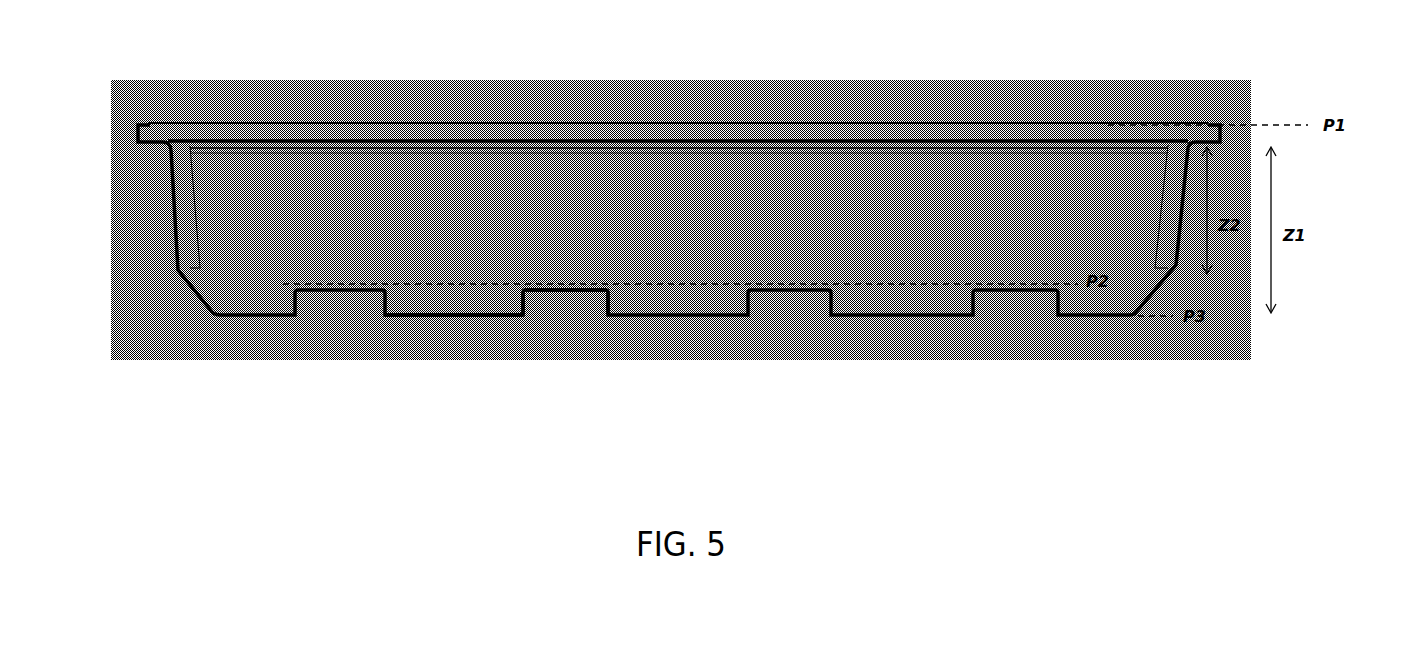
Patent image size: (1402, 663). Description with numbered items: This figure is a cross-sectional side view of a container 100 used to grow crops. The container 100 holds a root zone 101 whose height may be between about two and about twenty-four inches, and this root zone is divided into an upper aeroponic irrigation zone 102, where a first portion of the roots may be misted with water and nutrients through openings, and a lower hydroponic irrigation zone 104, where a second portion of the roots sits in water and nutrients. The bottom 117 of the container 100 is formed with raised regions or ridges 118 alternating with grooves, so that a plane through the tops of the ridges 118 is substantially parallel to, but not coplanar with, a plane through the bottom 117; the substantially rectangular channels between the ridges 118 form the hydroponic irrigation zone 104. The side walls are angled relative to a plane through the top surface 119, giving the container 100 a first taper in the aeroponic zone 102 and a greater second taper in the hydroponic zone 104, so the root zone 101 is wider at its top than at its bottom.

The container 100 is at (132, 122).
The root zone 101 is at (253, 185).
The aeroponic irrigation zone 102 is at (177, 208).
The hydroponic irrigation zone 104 is at (188, 294).
The bottom 117 is at (412, 307).
The ridges 118 is at (552, 285).
The top surface 119 is at (1195, 117).